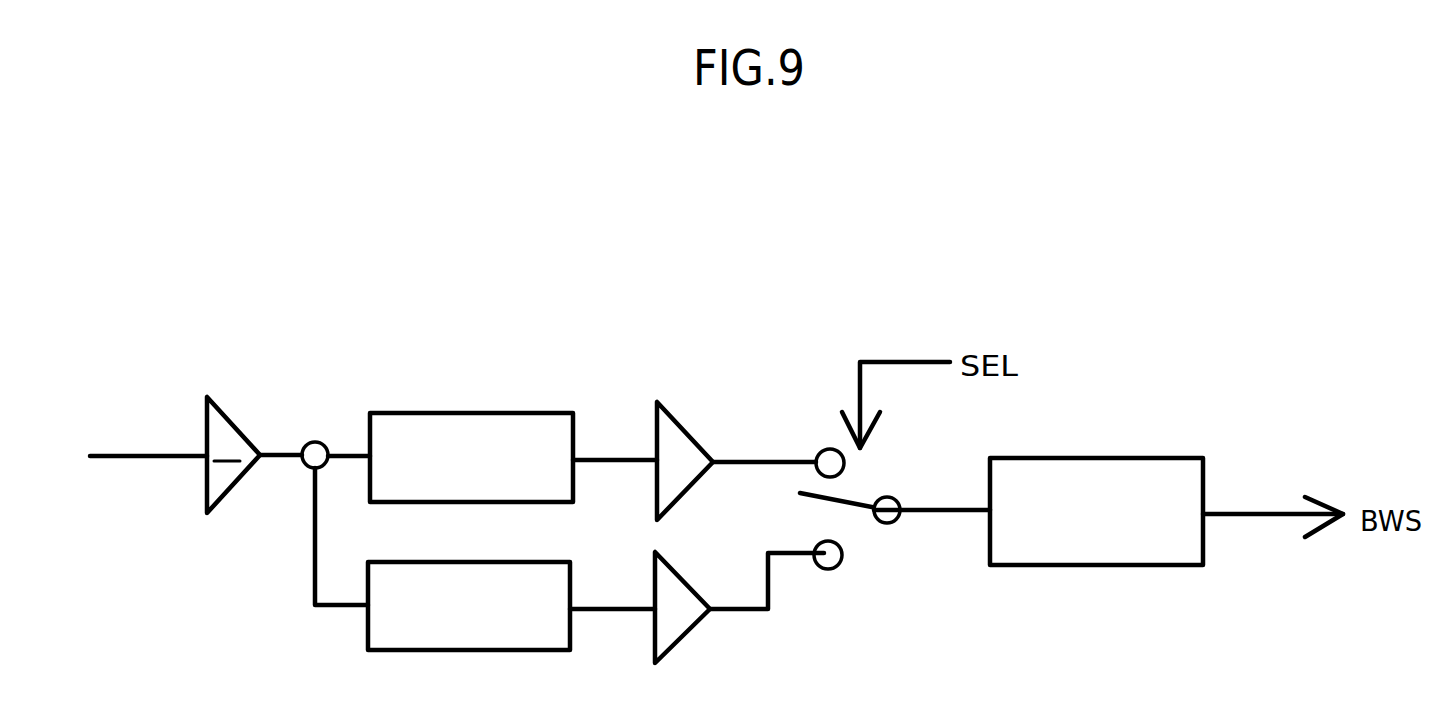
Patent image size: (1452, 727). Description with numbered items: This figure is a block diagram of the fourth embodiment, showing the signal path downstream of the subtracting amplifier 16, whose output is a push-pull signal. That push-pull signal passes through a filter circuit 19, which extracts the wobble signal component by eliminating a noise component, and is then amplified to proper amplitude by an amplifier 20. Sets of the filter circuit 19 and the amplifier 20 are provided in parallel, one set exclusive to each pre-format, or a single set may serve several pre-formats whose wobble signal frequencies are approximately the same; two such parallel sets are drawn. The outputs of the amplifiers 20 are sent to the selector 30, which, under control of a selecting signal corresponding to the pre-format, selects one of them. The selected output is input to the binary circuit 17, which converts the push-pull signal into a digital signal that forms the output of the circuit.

The subtracting amplifier 16 is at (237, 422).
The filter circuit 19 is at (498, 413).
The amplifier 20 is at (670, 412).
The selector 30 is at (890, 524).
The binary circuit 17 is at (1080, 565).